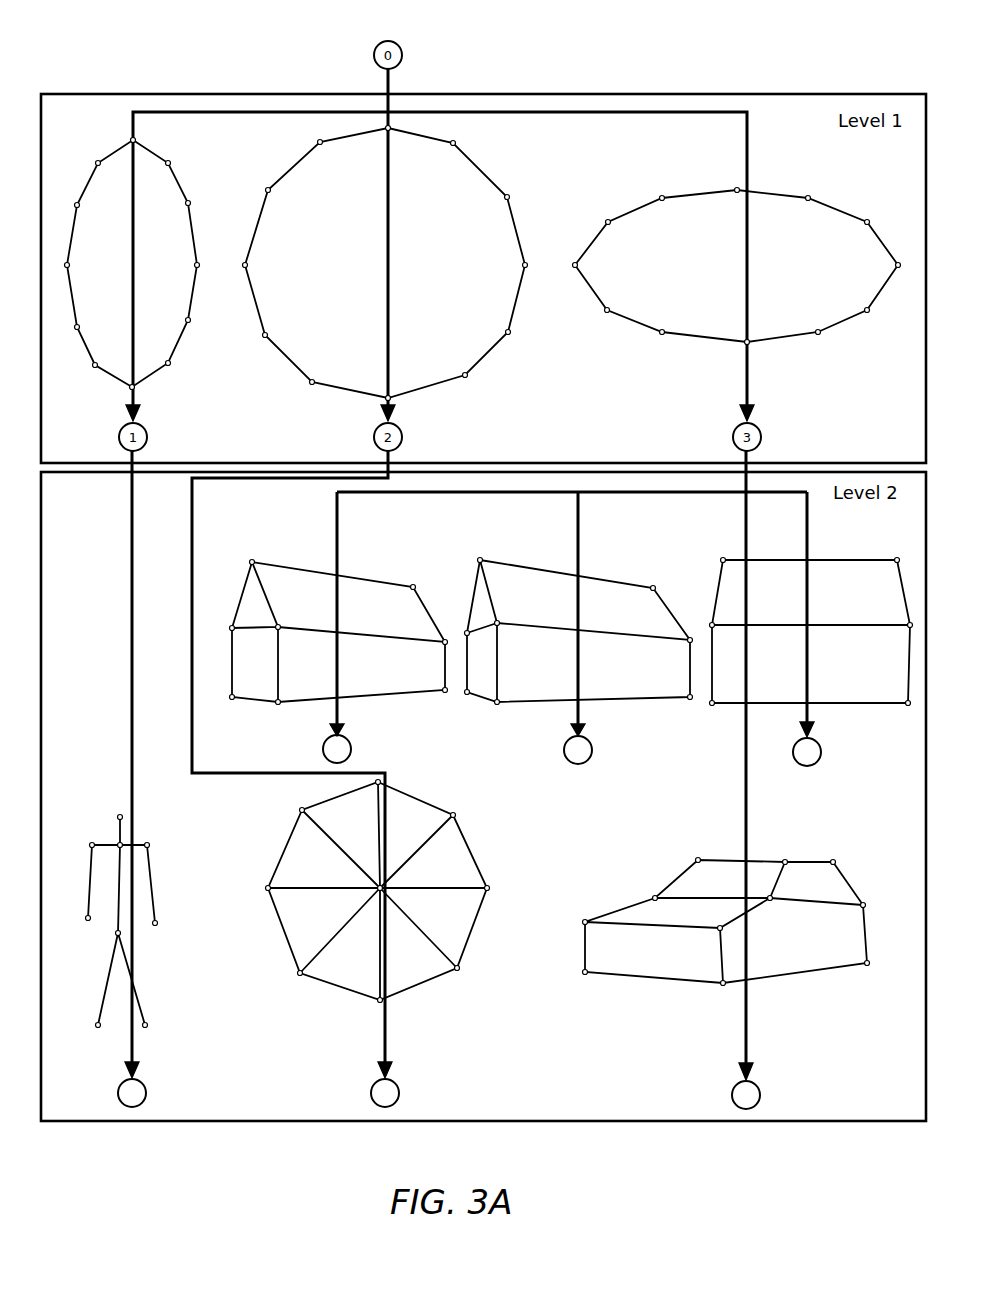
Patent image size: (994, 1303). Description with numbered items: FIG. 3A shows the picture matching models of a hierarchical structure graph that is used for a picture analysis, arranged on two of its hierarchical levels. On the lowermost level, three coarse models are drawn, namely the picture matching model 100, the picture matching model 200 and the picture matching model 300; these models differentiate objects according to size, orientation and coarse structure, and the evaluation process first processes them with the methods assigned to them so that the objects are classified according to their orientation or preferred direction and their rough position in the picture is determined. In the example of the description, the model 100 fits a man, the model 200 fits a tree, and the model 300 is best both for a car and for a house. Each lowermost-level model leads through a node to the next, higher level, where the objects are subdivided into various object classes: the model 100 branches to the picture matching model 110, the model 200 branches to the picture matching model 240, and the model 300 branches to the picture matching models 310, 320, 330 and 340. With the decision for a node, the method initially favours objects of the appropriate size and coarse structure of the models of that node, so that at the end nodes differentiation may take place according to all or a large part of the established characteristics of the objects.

The picture matching model 100 is at (131, 264).
The picture matching model 200 is at (385, 263).
The picture matching model 300 is at (737, 260).
The picture matching model 110 is at (105, 921).
The picture matching model 310 is at (339, 623).
The picture matching model 320 is at (579, 622).
The picture matching model 330 is at (811, 623).
The picture matching model 240 is at (372, 891).
The picture matching model 340 is at (726, 911).